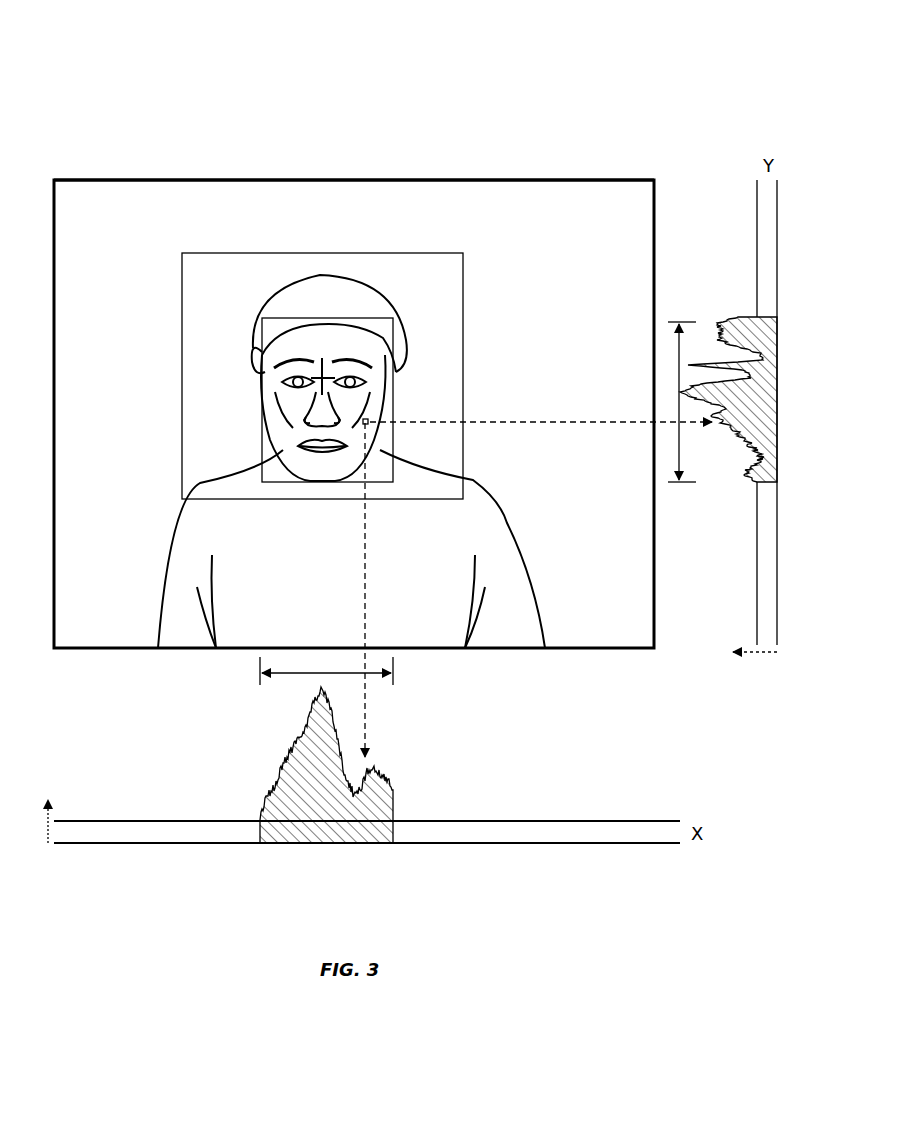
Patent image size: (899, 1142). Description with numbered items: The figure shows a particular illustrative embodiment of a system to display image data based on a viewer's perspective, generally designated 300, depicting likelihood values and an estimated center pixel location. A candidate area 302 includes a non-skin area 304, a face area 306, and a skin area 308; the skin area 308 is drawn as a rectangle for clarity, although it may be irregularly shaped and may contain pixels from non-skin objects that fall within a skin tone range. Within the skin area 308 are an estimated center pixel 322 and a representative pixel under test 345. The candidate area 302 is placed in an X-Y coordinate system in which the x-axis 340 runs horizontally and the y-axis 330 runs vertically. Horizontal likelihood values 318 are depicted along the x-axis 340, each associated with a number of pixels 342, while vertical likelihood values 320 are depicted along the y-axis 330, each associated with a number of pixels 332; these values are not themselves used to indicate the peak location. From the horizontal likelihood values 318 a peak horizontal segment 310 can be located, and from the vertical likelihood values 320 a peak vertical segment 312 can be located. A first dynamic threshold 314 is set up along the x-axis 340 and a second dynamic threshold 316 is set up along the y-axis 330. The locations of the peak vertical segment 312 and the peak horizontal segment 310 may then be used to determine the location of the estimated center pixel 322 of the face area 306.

The system to display image data based on a viewer's perspective 300 is at (100, 68).
The candidate area 302 is at (54, 232).
The non-skin area 304 is at (254, 190).
The face area 306 is at (262, 432).
The skin area 308 is at (463, 285).
The peak horizontal segment 310 is at (376, 677).
The peak vertical segment 312 is at (679, 370).
The first dynamic threshold 314 is at (612, 821).
The second dynamic threshold 316 is at (757, 243).
The horizontal likelihood values 318 is at (320, 692).
The vertical likelihood values 320 is at (685, 395).
The estimated center pixel 322 is at (320, 376).
The y-axis 330 is at (777, 208).
The number of pixels 332 is at (745, 655).
The x-axis 340 is at (612, 843).
The number of pixels 342 is at (48, 800).
The representative pixel under test 345 is at (368, 421).